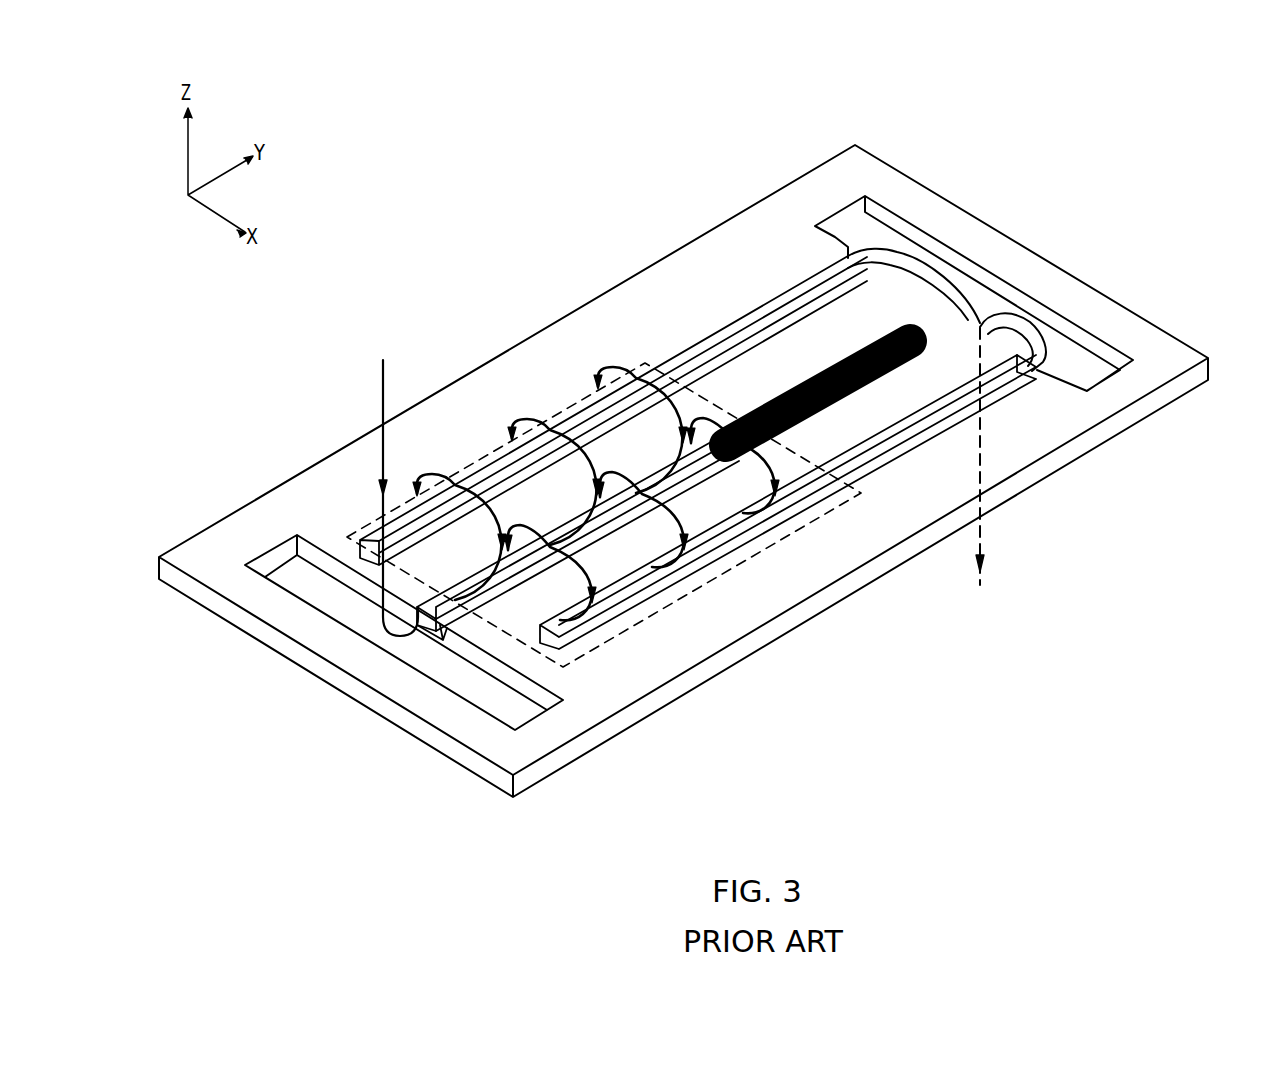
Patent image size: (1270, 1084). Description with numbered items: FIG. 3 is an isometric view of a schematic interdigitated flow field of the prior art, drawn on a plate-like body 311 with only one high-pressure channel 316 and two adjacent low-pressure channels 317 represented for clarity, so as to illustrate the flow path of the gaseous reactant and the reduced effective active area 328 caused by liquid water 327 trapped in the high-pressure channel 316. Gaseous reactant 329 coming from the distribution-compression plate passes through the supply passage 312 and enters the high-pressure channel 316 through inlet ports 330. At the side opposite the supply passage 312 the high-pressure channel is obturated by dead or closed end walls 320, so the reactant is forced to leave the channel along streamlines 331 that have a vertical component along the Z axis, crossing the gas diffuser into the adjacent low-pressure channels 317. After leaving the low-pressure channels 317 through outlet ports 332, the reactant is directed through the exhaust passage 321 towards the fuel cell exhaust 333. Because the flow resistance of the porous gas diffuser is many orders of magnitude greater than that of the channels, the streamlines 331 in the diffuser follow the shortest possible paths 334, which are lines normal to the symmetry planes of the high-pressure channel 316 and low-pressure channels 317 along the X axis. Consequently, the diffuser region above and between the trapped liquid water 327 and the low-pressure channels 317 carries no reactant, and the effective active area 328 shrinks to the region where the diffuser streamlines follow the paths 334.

The substrate board 311 is at (275, 642).
The supply passage 312 is at (333, 602).
The high-pressure channel 316 is at (587, 543).
The low-pressure channels 317 is at (827, 468).
The dead or closed end walls 320 is at (847, 247).
The exhaust passage 321 is at (973, 303).
The liquid water 327 is at (768, 388).
The effective active area 328 is at (572, 404).
The gaseous reactant 329 is at (382, 385).
The inlet ports 330 is at (430, 638).
The streamlines 331 is at (722, 462).
The outlet ports 332 is at (1037, 370).
The fuel cell exhaust 333 is at (985, 572).
The shortest possible paths 334 is at (697, 418).